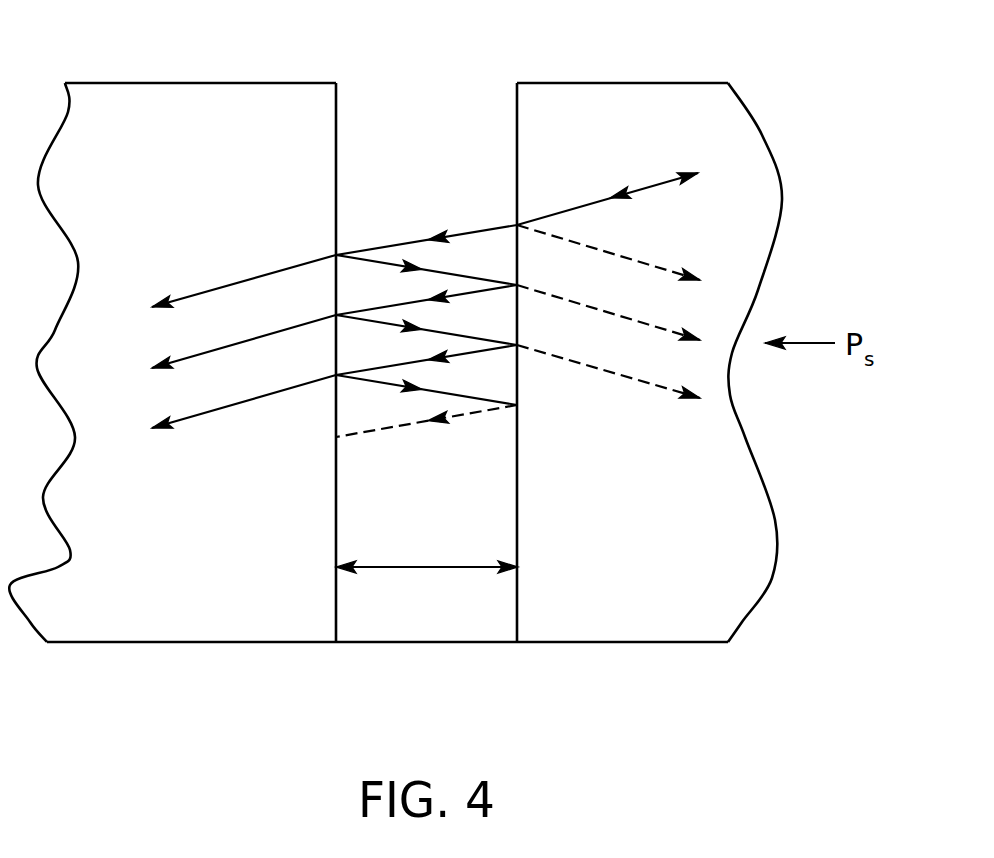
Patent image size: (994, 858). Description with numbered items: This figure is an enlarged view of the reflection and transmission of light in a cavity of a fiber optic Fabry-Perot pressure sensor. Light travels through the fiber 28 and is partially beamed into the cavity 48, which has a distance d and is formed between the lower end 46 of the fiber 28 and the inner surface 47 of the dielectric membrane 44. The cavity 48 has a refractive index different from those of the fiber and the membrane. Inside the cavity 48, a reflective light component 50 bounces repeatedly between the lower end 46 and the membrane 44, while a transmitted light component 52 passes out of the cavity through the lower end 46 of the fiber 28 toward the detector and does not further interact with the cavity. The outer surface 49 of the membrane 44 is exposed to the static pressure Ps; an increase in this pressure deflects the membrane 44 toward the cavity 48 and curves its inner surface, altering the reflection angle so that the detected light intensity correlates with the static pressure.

The fiber 28 is at (223, 83).
The dielectric membrane 44 is at (628, 83).
The lower end 46 is at (337, 505).
The inner surface 47 is at (517, 125).
The cavity 48 is at (432, 628).
The outer surface 49 is at (755, 462).
The reflective light component 50 is at (437, 232).
The transmitted light component 52 is at (217, 287).